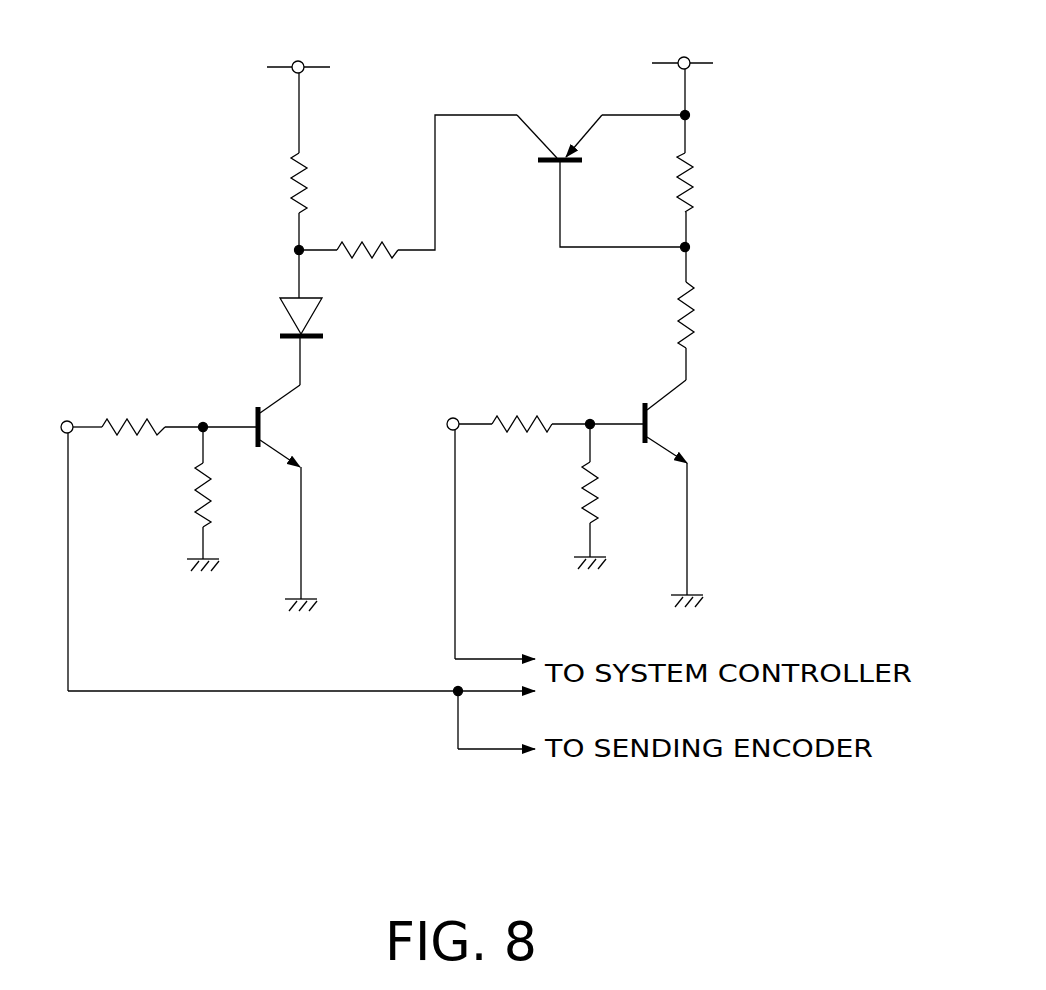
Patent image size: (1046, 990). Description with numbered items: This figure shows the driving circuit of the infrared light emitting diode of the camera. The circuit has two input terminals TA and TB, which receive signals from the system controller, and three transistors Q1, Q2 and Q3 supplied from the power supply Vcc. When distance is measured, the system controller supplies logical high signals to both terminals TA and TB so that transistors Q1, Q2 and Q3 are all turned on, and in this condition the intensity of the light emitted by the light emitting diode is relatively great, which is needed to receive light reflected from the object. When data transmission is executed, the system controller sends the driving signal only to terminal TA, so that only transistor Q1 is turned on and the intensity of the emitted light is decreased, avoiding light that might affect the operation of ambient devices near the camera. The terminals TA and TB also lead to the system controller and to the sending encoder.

The terminal TA is at (66, 421).
The terminal TB is at (451, 418).
The transistor Q1 is at (283, 430).
The transistor Q2 is at (670, 428).
The transistor Q3 is at (563, 142).
The supply voltage terminal Vcc is at (514, 53).